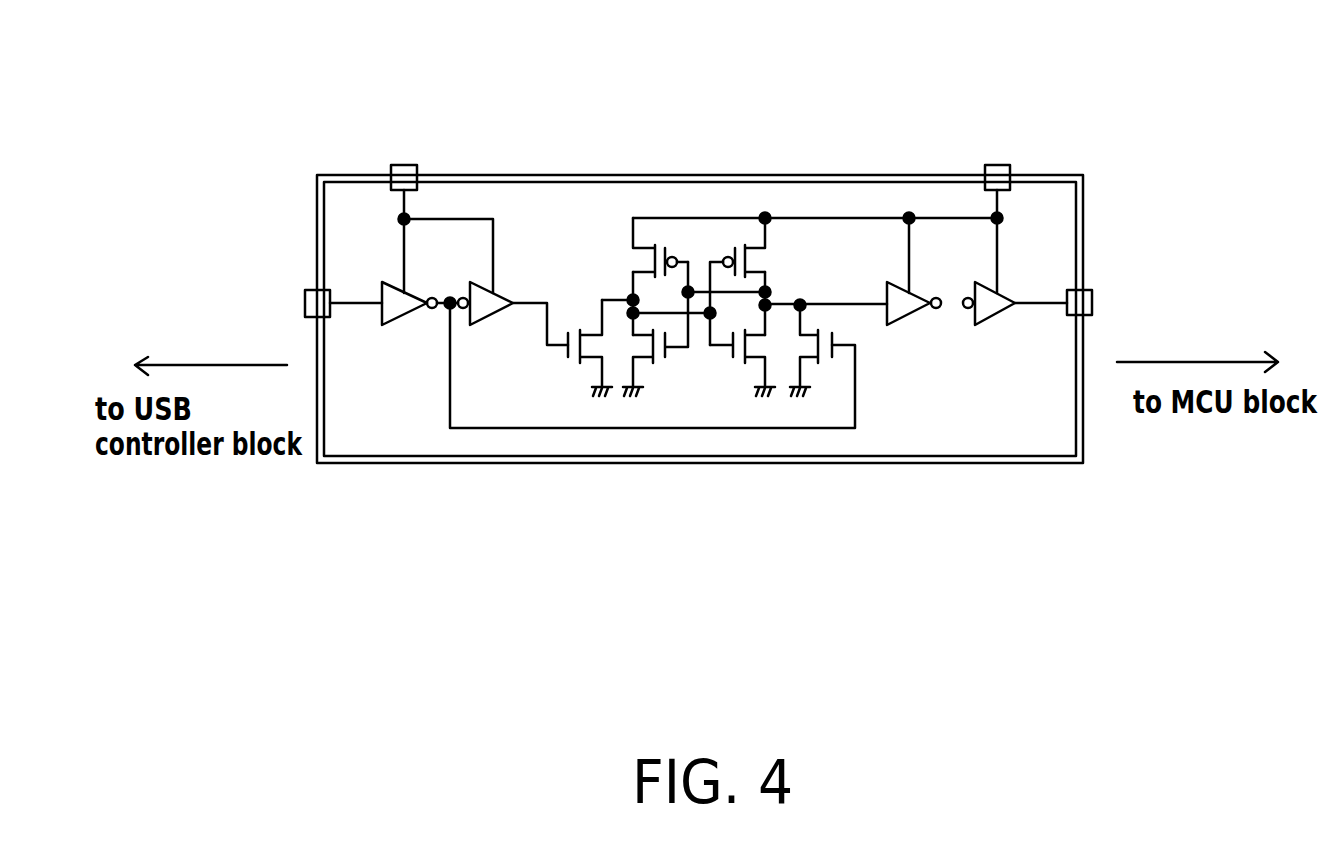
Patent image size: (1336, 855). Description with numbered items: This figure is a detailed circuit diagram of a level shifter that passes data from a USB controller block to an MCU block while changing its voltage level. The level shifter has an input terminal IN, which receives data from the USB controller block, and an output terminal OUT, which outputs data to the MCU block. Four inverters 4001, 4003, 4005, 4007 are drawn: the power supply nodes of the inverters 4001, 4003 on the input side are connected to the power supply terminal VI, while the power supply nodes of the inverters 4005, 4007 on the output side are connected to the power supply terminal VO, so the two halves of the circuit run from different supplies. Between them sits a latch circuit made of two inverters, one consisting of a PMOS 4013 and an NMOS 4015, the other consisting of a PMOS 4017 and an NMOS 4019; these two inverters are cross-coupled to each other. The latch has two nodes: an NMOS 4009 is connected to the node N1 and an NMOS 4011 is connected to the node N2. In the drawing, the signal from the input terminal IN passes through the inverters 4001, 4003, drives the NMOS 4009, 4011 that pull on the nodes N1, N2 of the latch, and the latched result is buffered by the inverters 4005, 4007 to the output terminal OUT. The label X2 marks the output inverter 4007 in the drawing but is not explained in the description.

The inverter 4001 is at (407, 317).
The inverter 4003 is at (493, 320).
The inverter 4005 is at (915, 315).
The inverter 4007 is at (1007, 315).
The NMOS 4009 is at (585, 368).
The NMOS 4011 is at (827, 365).
The PMOS 4013 is at (677, 243).
The NMOS 4015 is at (662, 363).
The PMOS 4017 is at (742, 235).
The NMOS 4019 is at (747, 367).
The node N1 is at (632, 290).
The node N2 is at (772, 288).
The output inverter designation X2 is at (1003, 292).
The power supply terminal VI is at (403, 173).
The power supply terminal VO is at (998, 173).
The input terminal IN is at (322, 303).
The output terminal OUT is at (1093, 303).